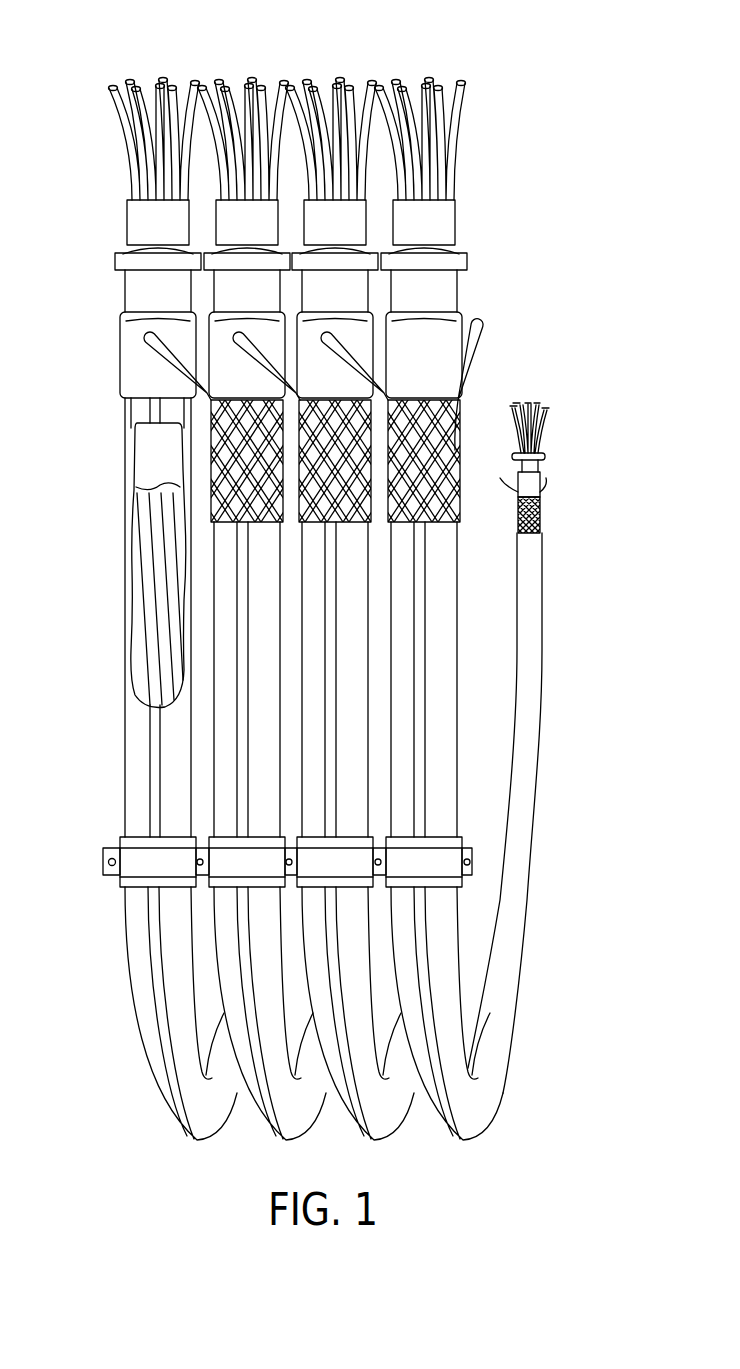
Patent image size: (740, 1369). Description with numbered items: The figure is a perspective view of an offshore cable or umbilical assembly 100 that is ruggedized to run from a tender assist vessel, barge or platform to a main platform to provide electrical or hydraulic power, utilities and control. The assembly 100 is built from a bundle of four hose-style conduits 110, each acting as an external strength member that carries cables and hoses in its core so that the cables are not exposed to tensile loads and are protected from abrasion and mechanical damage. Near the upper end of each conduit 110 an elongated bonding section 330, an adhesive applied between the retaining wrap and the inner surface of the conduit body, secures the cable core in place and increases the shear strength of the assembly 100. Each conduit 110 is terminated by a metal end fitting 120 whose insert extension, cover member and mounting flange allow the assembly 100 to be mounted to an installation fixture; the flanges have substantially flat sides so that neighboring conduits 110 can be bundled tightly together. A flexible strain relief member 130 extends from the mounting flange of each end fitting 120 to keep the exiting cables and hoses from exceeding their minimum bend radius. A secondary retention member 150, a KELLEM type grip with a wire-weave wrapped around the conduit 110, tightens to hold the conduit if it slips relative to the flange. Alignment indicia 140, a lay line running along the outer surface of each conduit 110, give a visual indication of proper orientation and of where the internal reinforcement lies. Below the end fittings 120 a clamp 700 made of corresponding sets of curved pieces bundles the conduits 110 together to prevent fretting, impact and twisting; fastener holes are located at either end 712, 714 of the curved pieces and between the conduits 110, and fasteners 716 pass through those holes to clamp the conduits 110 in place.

The cable assembly 100 is at (566, 101).
The conduit 110 is at (306, 632).
The end fitting 120 is at (134, 365).
The strain relief member 130 is at (142, 227).
The alignment indicia 140 is at (157, 826).
The secondary retention member 150 is at (470, 403).
The elongated bonding section 330 is at (143, 455).
The clamp 700 is at (306, 886).
The end of curved pieces 712 is at (103, 862).
The end of curved pieces 714 is at (472, 860).
The fastener 716 is at (197, 866).